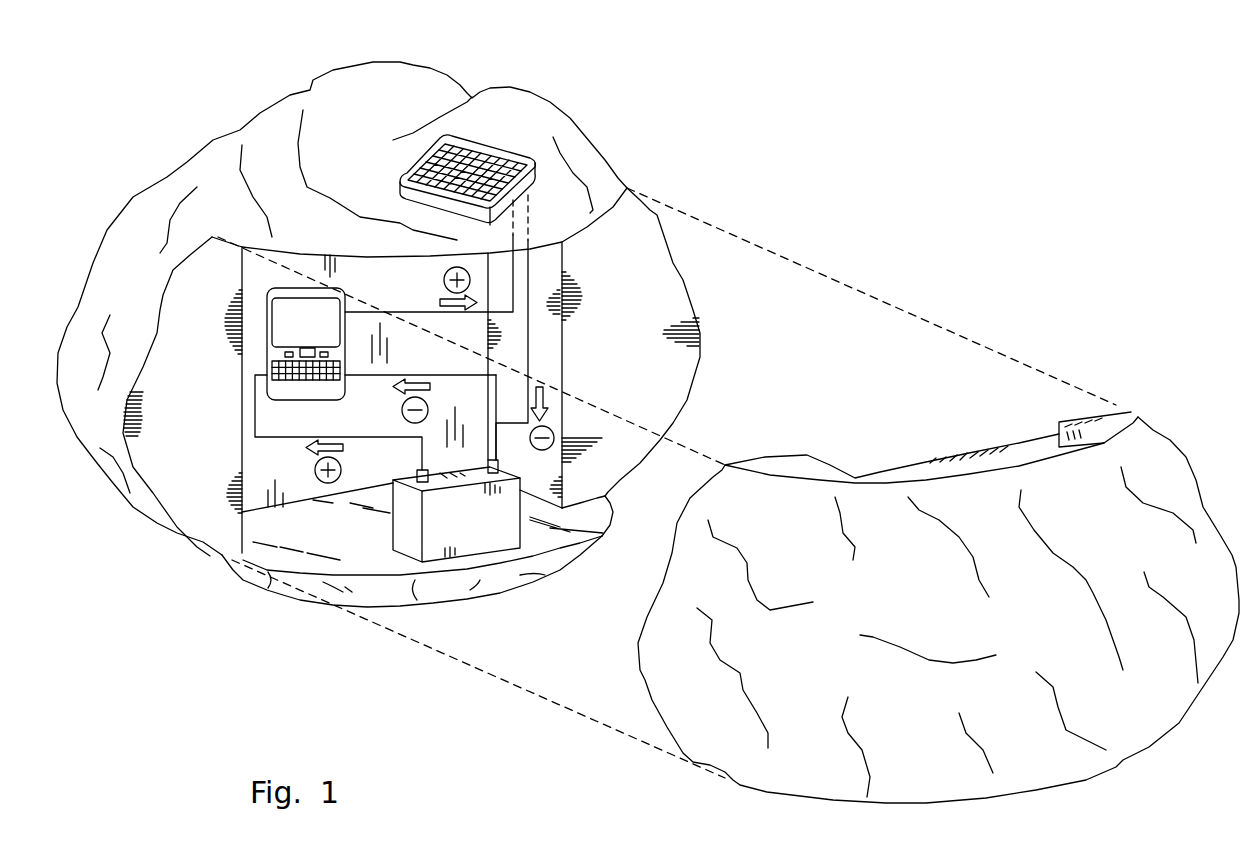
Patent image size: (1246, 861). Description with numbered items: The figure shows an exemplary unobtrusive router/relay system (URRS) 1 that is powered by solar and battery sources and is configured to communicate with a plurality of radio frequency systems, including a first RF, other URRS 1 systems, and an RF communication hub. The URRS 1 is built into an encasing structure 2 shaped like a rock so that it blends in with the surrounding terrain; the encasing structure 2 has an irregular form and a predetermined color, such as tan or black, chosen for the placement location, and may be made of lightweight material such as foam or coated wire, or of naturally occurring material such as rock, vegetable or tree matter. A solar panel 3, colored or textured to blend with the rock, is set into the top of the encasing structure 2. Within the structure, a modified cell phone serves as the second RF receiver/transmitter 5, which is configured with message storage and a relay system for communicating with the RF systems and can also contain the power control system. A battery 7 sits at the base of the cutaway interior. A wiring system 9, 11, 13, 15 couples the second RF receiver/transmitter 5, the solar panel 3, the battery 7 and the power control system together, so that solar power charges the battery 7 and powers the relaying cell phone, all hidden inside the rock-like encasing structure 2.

The unobtrusive router/relay system (URRS) 1 is at (938, 411).
The encasing structure 2 is at (378, 294).
The solar panel 3 is at (472, 133).
The second RF receiver/transmitter 5 is at (202, 313).
The battery 7 is at (456, 559).
The wiring system 9 is at (524, 256).
The wiring system 11 is at (625, 327).
The wiring system 13 is at (580, 386).
The wiring system 15 is at (281, 400).